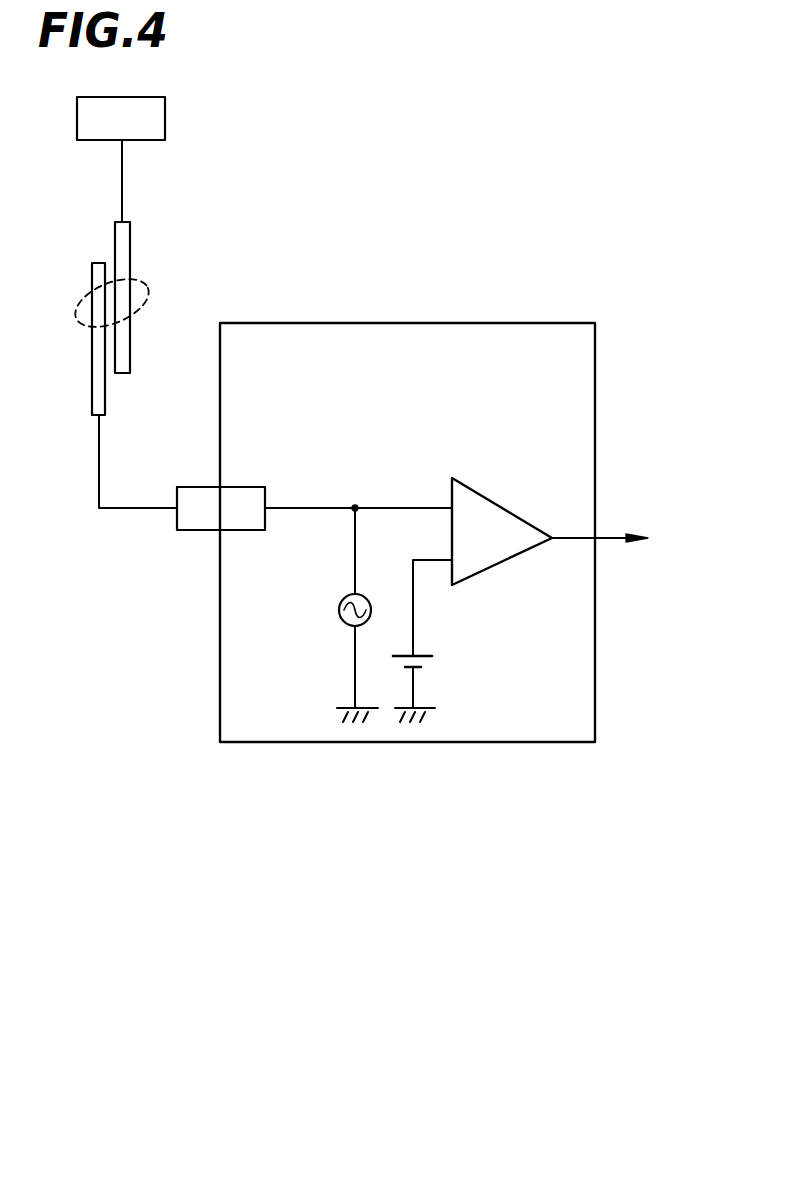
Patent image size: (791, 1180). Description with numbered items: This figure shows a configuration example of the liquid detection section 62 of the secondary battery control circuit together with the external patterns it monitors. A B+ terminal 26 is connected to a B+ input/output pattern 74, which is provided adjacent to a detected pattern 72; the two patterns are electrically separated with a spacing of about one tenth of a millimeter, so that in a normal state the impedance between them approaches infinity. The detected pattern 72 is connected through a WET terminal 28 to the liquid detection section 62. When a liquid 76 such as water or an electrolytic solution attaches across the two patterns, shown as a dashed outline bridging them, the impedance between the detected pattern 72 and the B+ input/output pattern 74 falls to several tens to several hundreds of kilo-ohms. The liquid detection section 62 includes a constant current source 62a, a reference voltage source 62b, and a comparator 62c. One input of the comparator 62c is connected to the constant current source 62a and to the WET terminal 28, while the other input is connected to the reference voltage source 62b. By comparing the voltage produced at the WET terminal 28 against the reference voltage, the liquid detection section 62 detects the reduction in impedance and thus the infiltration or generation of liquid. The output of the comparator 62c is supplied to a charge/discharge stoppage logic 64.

The B+ terminal 26 is at (165, 120).
The B+ input/output pattern 74 is at (130, 240).
The detected pattern 72 is at (90, 390).
The liquid 76 is at (148, 288).
The WET terminal 28 is at (190, 530).
The liquid detection section 62 is at (393, 323).
The comparator 62c is at (492, 498).
The constant current source 62a is at (338, 604).
The reference voltage source 62b is at (432, 656).
The charge/discharge stoppage logic 64 is at (640, 541).